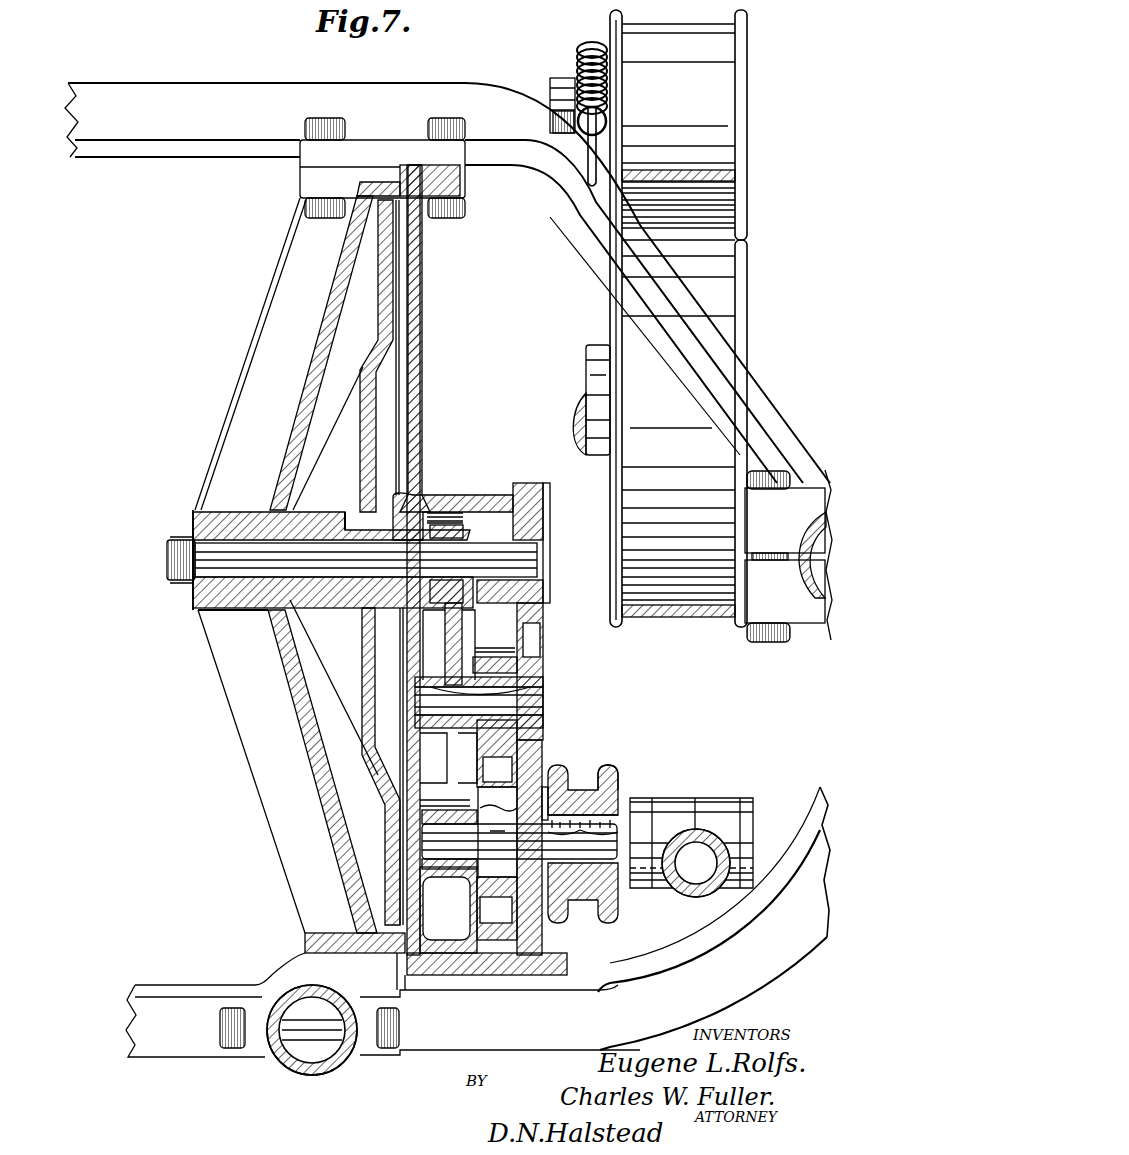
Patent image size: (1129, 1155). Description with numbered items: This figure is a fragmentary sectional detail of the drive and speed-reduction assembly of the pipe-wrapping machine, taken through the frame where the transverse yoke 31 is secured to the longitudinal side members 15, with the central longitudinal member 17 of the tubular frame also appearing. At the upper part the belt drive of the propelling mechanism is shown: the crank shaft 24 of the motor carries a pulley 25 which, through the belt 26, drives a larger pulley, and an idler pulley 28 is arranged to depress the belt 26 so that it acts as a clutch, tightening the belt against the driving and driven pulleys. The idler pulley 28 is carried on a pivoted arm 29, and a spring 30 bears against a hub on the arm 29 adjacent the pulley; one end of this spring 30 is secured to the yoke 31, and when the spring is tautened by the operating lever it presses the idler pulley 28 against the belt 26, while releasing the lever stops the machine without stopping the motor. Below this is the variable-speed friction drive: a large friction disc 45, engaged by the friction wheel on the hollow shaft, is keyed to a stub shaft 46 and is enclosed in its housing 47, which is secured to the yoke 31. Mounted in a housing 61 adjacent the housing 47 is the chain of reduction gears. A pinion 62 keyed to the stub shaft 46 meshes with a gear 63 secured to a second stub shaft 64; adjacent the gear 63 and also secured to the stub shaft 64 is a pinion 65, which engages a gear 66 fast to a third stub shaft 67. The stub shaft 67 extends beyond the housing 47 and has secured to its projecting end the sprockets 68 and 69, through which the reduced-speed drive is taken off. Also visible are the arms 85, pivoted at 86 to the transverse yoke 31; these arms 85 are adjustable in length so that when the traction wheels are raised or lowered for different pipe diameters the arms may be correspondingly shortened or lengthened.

The longitudinal side members 15 is at (812, 627).
The central longitudinal member 17 is at (314, 1072).
The crank shaft 24 is at (594, 352).
The pulley 25 is at (611, 498).
The belt 26 is at (720, 177).
The idler pulley 28 is at (748, 66).
The pivoted arm 29 is at (548, 78).
The spring 30 is at (580, 56).
The yoke 31 is at (264, 95).
The friction disc 45 is at (380, 290).
The stub shaft 46 is at (253, 572).
The housing 47 is at (312, 773).
The housing 61 is at (448, 515).
The pinion 62 is at (452, 525).
The gear 63 is at (465, 632).
The stub shaft 64 is at (527, 700).
The pinion 65 is at (512, 660).
The gear 66 is at (495, 940).
The stub shaft 67 is at (452, 845).
The sprocket 68 is at (560, 764).
The sprocket 69 is at (606, 764).
The arms 85 is at (690, 892).
The pivot 86 is at (800, 852).